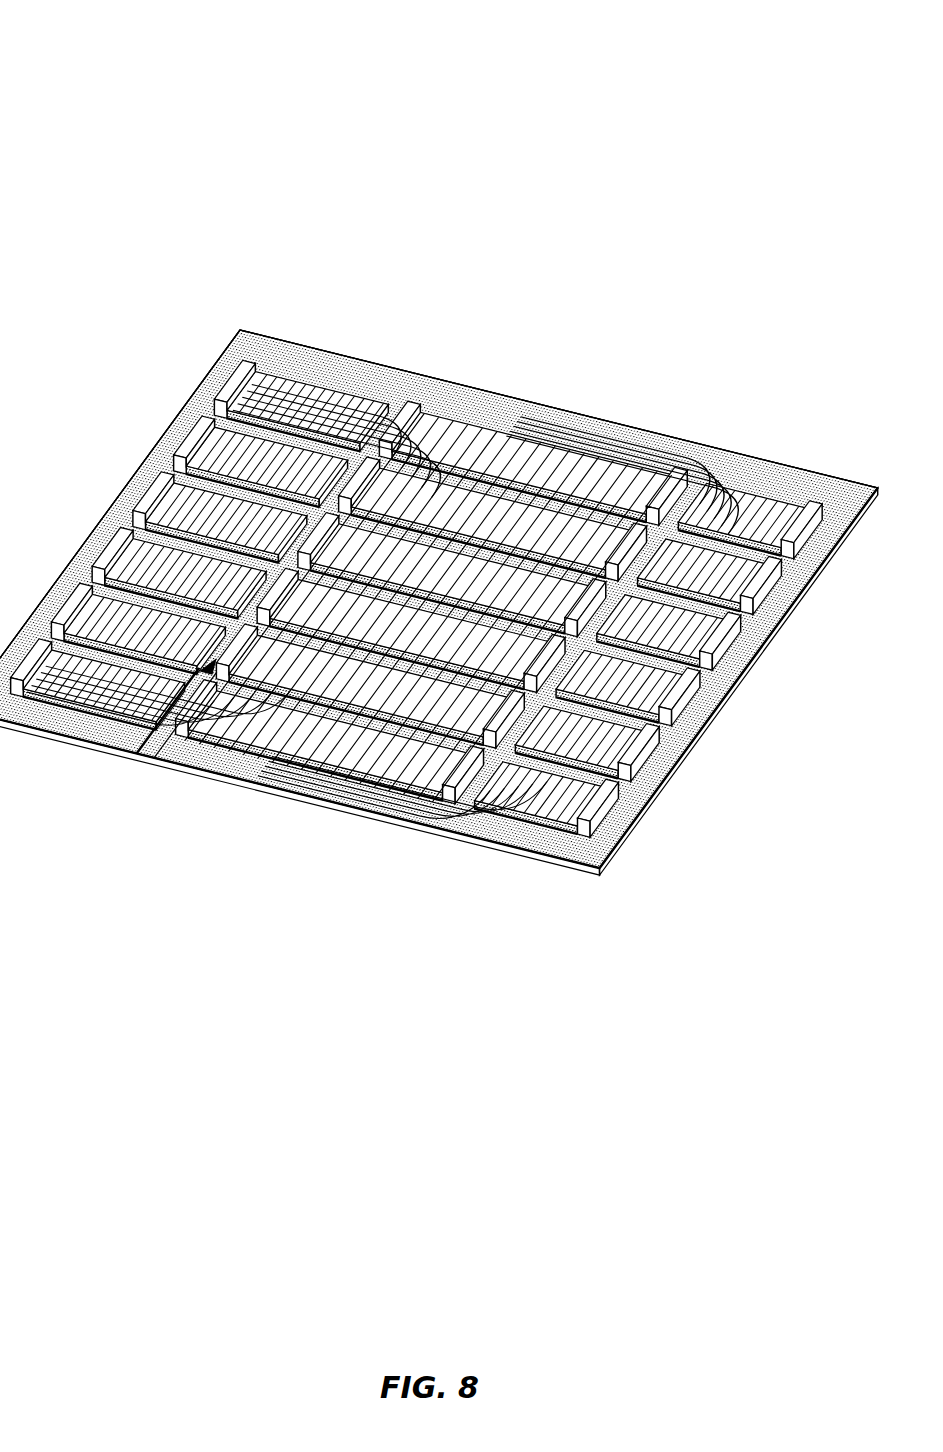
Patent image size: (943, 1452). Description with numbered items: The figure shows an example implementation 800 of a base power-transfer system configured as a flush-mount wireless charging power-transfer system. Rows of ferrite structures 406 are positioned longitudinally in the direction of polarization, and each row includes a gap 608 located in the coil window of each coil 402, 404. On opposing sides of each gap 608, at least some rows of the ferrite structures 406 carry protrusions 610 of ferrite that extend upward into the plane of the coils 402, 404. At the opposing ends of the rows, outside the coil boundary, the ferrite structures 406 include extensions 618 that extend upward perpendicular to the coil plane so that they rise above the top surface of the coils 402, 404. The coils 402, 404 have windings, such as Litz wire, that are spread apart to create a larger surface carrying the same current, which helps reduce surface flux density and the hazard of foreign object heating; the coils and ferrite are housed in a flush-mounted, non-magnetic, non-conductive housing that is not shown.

The example implementation 800 is at (760, 74).
The coil 402 is at (335, 372).
The coil 404 is at (580, 432).
The ferrite structures 406 is at (377, 482).
The protrusions 610 is at (305, 543).
The extensions 618 is at (118, 537).
The gaps 608 is at (150, 725).